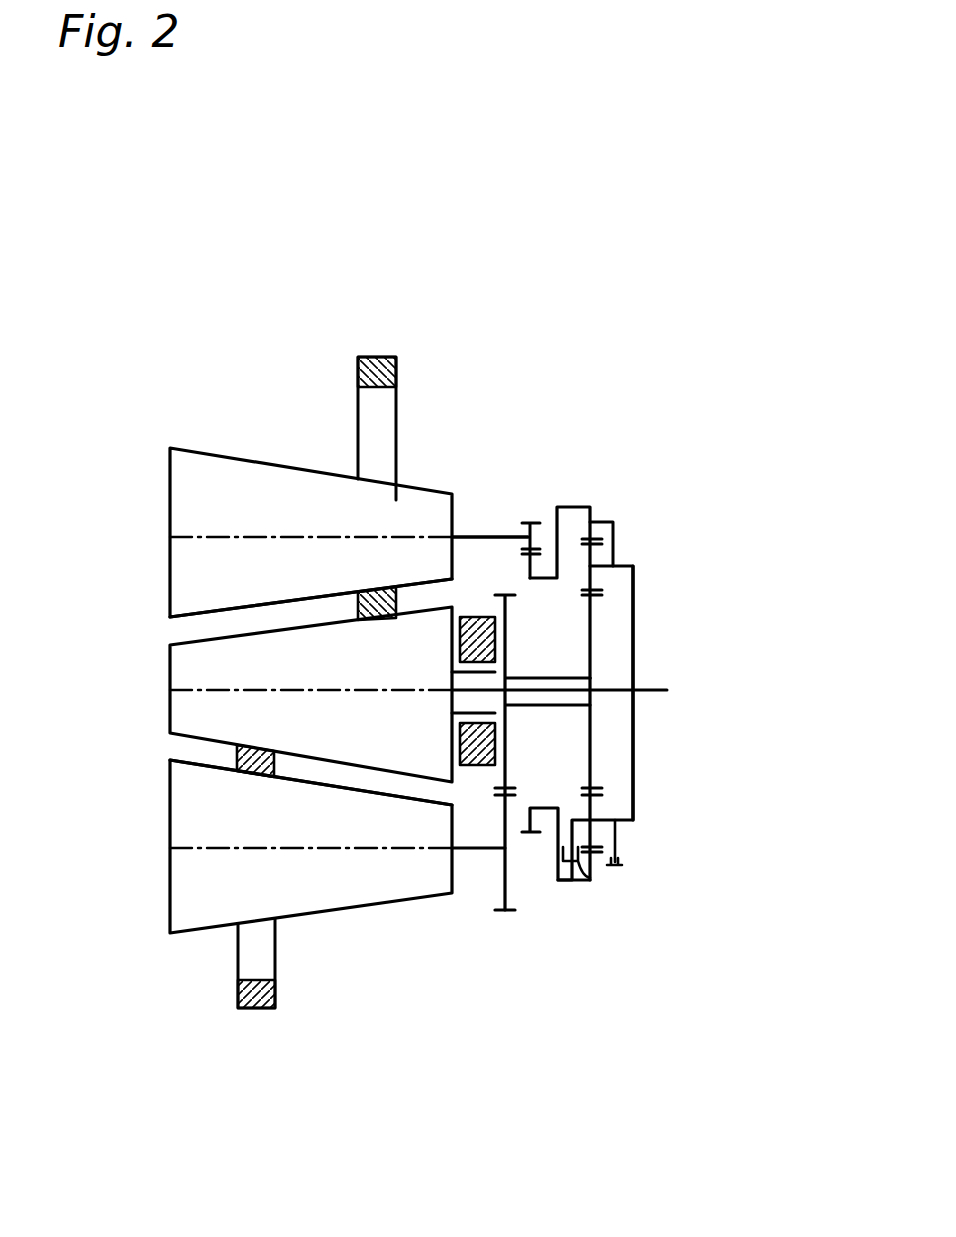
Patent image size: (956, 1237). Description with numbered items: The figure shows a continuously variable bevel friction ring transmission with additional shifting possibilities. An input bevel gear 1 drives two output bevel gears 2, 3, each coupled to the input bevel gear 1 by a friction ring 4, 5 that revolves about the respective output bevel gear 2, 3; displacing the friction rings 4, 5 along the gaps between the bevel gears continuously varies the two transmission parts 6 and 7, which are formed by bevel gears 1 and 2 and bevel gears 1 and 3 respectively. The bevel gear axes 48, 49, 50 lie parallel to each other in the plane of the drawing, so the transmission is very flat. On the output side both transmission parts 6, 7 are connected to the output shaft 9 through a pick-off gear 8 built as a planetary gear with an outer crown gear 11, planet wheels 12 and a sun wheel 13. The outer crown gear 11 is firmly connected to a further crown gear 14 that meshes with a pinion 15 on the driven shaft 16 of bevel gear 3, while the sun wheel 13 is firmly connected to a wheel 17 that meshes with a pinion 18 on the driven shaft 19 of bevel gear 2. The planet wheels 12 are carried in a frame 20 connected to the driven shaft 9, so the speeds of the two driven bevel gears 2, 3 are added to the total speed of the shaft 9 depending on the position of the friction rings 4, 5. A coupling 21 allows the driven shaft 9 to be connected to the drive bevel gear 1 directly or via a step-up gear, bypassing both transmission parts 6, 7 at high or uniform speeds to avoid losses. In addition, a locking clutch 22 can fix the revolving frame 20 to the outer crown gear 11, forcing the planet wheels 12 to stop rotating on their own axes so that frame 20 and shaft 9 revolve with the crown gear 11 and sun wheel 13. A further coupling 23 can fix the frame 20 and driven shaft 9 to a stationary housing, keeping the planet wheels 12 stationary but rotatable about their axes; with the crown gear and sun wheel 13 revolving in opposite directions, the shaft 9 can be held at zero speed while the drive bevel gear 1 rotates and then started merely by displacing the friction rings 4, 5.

The input bevel gear 1 is at (173, 718).
The output bevel gear 2 is at (176, 910).
The output bevel gear 3 is at (180, 483).
The friction ring 4 is at (240, 998).
The friction ring 5 is at (358, 373).
The transmission part 6 is at (160, 795).
The transmission part 7 is at (158, 613).
The pick-off gear 8 is at (586, 368).
The output shaft 9 is at (653, 690).
The outer crown gear 11 is at (584, 503).
The planet wheels 12 is at (596, 578).
The sun wheel 13 is at (590, 736).
The crown gear 14 is at (540, 820).
The pinion 15 is at (548, 523).
The driven shaft 16 is at (482, 538).
The wheel 17 is at (505, 663).
The pinion 18 is at (505, 893).
The driven shaft 19 is at (470, 850).
The frame 20 is at (634, 592).
The coupling 21 is at (452, 663).
The locking clutch 22 is at (613, 522).
The coupling 23 is at (590, 880).
The bevel gear axis 48 is at (166, 536).
The bevel gear axis 49 is at (170, 690).
The bevel gear axis 50 is at (170, 848).